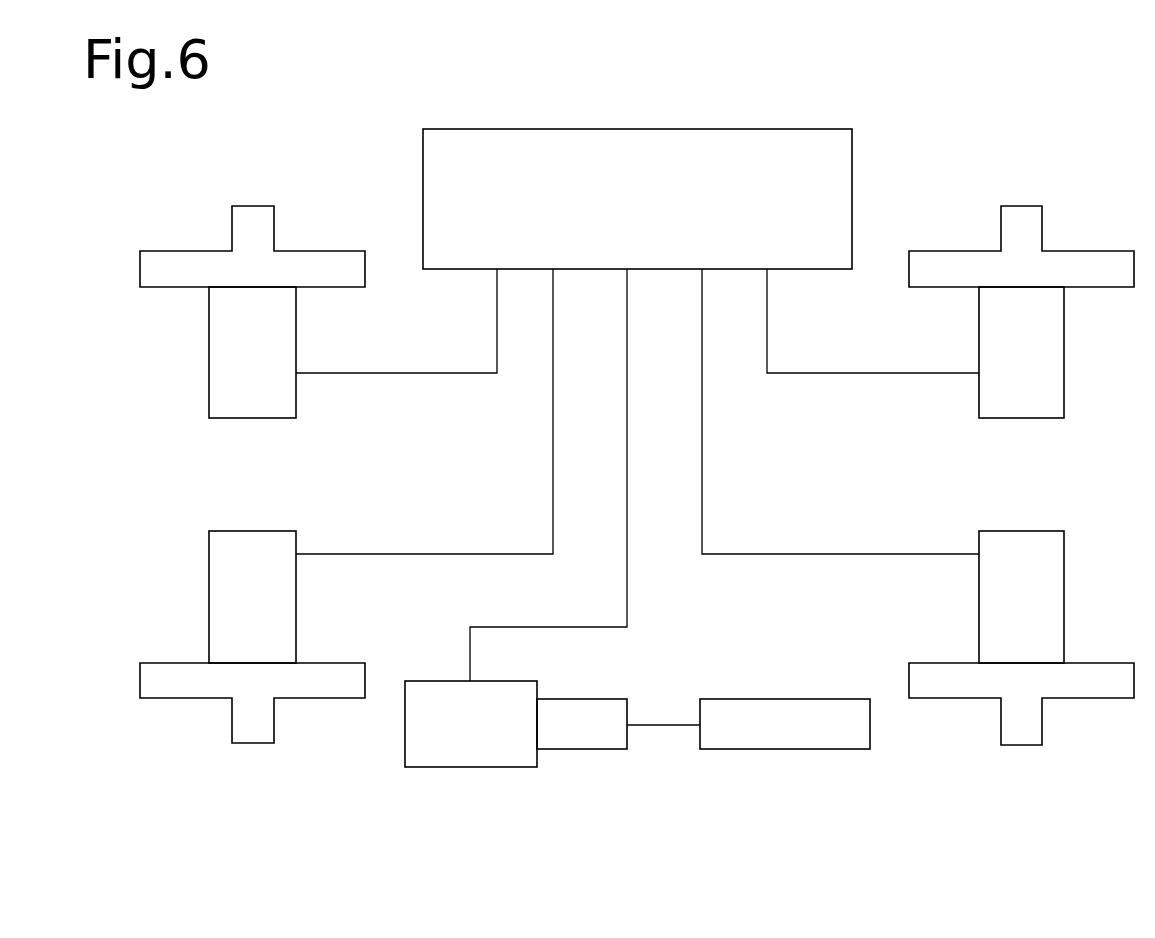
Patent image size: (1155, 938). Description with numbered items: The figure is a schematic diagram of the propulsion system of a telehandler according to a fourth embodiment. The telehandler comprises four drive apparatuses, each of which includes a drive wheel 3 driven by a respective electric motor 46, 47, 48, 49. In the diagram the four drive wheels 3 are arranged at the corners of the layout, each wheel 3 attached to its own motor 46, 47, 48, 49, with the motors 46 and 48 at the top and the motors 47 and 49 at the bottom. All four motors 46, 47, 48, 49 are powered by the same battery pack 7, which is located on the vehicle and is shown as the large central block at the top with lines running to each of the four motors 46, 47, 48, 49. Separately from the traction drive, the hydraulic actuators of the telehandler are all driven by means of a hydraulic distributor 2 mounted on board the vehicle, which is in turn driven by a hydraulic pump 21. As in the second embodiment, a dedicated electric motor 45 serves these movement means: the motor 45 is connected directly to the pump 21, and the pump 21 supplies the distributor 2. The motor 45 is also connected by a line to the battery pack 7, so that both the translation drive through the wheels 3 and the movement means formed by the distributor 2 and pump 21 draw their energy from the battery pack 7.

The battery pack 7 is at (716, 129).
The drive wheel 3 is at (168, 251).
The electric motor 46 is at (285, 418).
The electric motor 47 is at (210, 577).
The electric motor 48 is at (1064, 352).
The electric motor 49 is at (1065, 568).
The electric motor 45 is at (475, 735).
The hydraulic pump 21 is at (583, 730).
The hydraulic distributor 2 is at (783, 698).